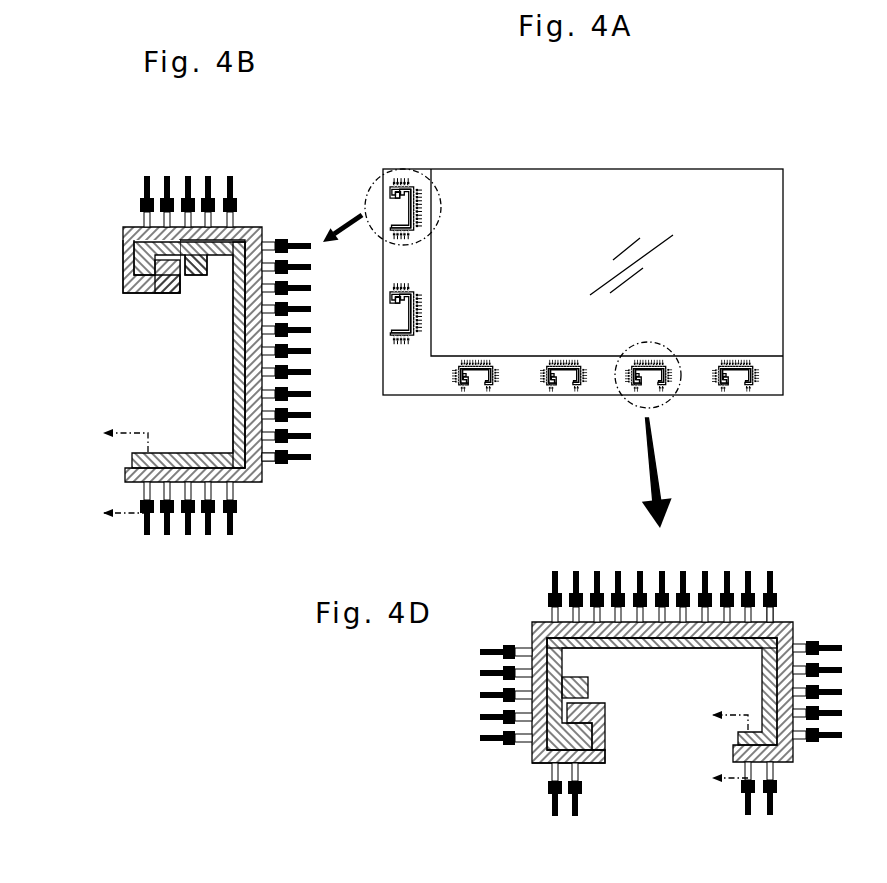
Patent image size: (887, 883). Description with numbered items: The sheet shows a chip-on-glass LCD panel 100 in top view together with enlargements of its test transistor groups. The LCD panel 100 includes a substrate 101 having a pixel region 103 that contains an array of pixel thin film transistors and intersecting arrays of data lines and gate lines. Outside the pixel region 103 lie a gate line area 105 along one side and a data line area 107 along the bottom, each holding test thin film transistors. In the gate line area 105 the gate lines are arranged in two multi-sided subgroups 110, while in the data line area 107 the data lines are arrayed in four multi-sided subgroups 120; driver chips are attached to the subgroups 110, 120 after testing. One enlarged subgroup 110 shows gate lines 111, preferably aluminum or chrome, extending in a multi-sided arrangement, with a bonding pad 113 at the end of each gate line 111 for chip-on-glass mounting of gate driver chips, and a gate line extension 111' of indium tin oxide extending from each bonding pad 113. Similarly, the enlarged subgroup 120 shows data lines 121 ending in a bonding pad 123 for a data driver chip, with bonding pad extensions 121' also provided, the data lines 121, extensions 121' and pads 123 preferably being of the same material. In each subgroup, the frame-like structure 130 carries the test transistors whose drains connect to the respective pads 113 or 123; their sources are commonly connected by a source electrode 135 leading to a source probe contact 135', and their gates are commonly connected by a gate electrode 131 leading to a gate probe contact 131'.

In FIG. 4A, the LCD panel 100 is at (387, 138).
In FIG. 4A, the substrate 101 is at (583, 398).
In FIG. 4A, the pixel region 103 is at (666, 200).
In FIG. 4A, the gate line area 105 is at (406, 262).
In FIG. 4A, the data line area 107 is at (520, 387).
In FIG. 4B, the subgroup 110 is at (104, 200).
In FIG. 4A, the subgroup 110 is at (419, 176).
In FIG. 4B, the gate lines 111 is at (322, 362).
In FIG. 4B, the gate line extension 111' is at (272, 495).
In FIG. 4B, the bonding pad 113 is at (286, 461).
In FIG. 4A, the subgroup 120 is at (669, 409).
In FIG. 4D, the subgroup 120 is at (526, 572).
In FIG. 4D, the data lines 121 is at (662, 567).
In FIG. 4D, the bonding pad extensions 121' is at (813, 608).
In FIG. 4D, the bonding pad 123 is at (776, 598).
In FIG. 4B, the inner frame 130 is at (232, 436).
In FIG. 4D, the inner frame 130 is at (724, 651).
In FIG. 4B, the gate electrode 131 is at (113, 266).
In FIG. 4D, the gate electrode 131 is at (600, 754).
In FIG. 4B, the gate probe contact 131' is at (146, 308).
In FIG. 4D, the gate probe contact 131' is at (623, 726).
In FIG. 4B, the source electrode 135 is at (196, 355).
In FIG. 4D, the source electrode 135 is at (662, 660).
In FIG. 4B, the source probe contact 135' is at (192, 301).
In FIG. 4D, the source probe contact 135' is at (608, 694).